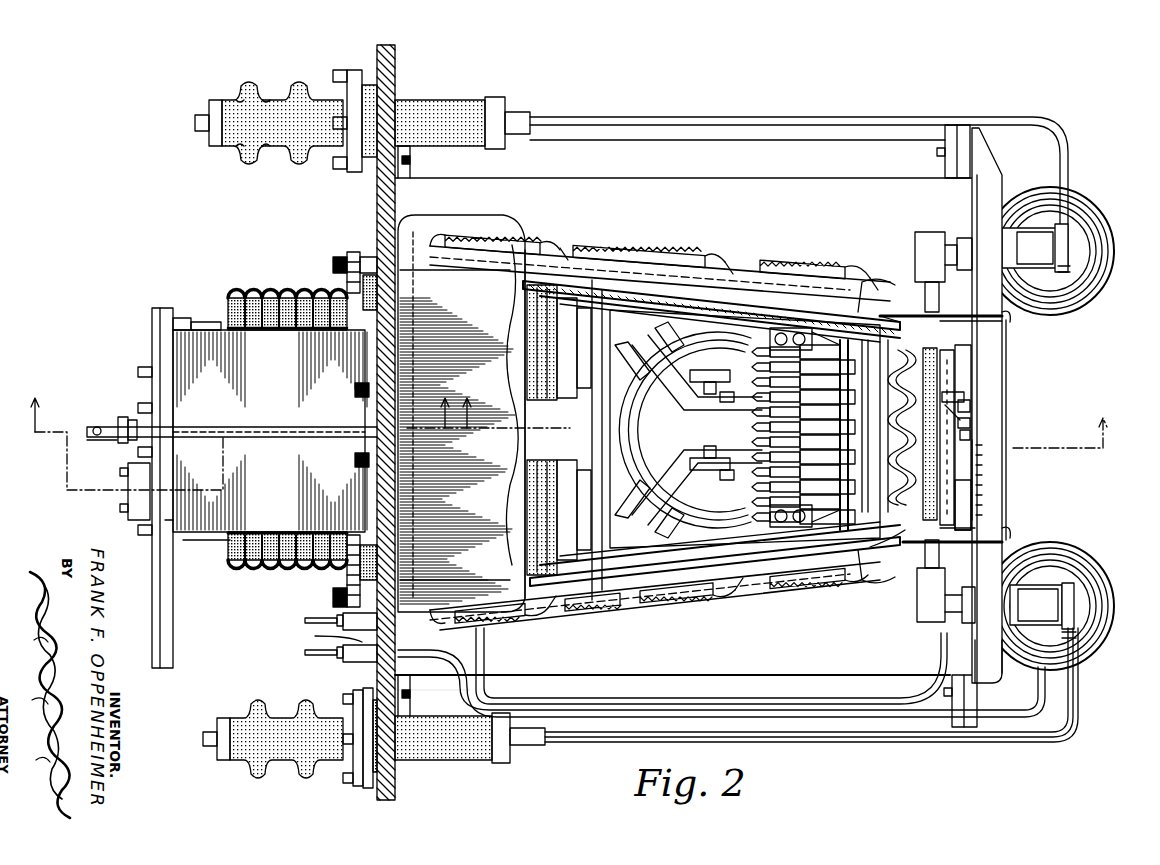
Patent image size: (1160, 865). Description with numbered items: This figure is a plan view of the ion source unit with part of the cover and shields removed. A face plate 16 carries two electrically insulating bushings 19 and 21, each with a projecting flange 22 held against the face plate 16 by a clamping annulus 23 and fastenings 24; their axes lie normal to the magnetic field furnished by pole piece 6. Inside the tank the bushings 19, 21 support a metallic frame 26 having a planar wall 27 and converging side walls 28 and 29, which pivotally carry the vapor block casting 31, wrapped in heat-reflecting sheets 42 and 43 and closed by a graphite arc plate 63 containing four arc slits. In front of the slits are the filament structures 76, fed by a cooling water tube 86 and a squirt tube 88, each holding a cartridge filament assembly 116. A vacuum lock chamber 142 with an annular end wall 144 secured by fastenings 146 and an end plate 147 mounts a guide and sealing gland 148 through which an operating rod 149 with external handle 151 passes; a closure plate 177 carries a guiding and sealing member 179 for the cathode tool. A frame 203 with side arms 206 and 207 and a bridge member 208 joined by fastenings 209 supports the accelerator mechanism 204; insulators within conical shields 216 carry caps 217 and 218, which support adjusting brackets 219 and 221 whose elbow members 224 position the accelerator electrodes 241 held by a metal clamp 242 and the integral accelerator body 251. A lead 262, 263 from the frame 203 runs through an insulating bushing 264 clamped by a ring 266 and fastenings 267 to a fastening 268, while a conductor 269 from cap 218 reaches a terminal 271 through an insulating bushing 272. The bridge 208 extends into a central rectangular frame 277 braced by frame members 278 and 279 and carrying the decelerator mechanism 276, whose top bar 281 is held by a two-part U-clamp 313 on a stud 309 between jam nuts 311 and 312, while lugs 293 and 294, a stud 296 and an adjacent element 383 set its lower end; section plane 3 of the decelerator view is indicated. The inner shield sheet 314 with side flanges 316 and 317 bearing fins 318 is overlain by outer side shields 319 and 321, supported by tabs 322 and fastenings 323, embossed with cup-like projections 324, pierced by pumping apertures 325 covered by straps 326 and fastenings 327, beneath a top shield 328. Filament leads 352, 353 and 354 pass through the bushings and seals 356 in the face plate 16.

The section line 3- 3 is at (785, 410).
The pole piece 6 is at (297, 429).
The face plate 16 is at (385, 797).
The electrically insulating bushing 19 is at (253, 293).
The electrically insulating bushing 21 is at (274, 570).
The projecting flange 22 is at (368, 255).
The clamping annulus 23 is at (350, 256).
The fastenings 24 is at (333, 266).
The metallic frame 26 is at (594, 423).
The planar wall 27 is at (596, 458).
The side wall 28 is at (702, 300).
The side wall 29 is at (745, 572).
The vapor block casting 31 is at (646, 438).
The sheet 42 is at (636, 405).
The sheet 43 is at (640, 445).
The graphite arc plate 63 is at (880, 426).
The filament structures 76 is at (754, 434).
The cooling water tube 86 is at (710, 420).
The squirt tube 88 is at (736, 436).
The filament assembly 116 is at (856, 355).
The vacuum lock chamber 142 is at (297, 407).
The annular end wall 144 is at (376, 408).
The fastenings 146 is at (355, 389).
The end plate 147 is at (172, 522).
The guide and sealing gland 148 is at (124, 416).
The operating rod 149 is at (103, 441).
The external handle 151 is at (97, 426).
The closure plate 177 is at (166, 652).
The guiding and sealing member 179 is at (122, 510).
The frame 203 is at (786, 682).
The accelerator mechanism 204 is at (882, 313).
The side arm 206 is at (692, 688).
The side arm 207 is at (770, 179).
The bridge member 208 is at (966, 216).
The fastenings 209 is at (937, 154).
The conical shield 216 is at (1064, 321).
The cap 217 is at (1058, 580).
The cap 218 is at (1050, 295).
The adjusting bracket 219 is at (1050, 610).
The adjusting bracket 221 is at (1040, 256).
The elbow member 224 is at (926, 240).
The accelerator electrodes 241 is at (884, 475).
The metal clamp 242 is at (906, 549).
The integral accelerator body 251 is at (884, 395).
The axle end 262 is at (1074, 600).
The pipe 263 is at (1076, 702).
The insulating bushing 264 is at (444, 762).
The ring 266 is at (363, 696).
The fastenings 267 is at (343, 699).
The fastening 268 is at (209, 736).
The conductor 269 is at (798, 119).
The terminal 271 is at (199, 114).
The insulating bushing 272 is at (446, 100).
The decelerator mechanism 276 is at (930, 348).
The central rectangular frame 277 is at (1000, 473).
The frame member 278 is at (985, 648).
The frame member 279 is at (1000, 172).
The top bar 281 is at (947, 378).
The lug 293 is at (966, 498).
The lug 294 is at (962, 359).
The stud 296 is at (970, 435).
The stud 309 is at (970, 423).
The jam nut 311 is at (946, 420).
The jam nut 312 is at (970, 406).
The two-part U-clamp 313 is at (964, 397).
The upper folded sheet 314 is at (516, 325).
The side flange 316 is at (675, 298).
The side flange 317 is at (645, 582).
The projecting fin 318 is at (838, 310).
The outer side shield 319 is at (604, 256).
The outer side shield 321 is at (595, 616).
The tab 322 is at (1008, 333).
The fastening 323 is at (988, 313).
The cup-like projection 324 is at (432, 230).
The aperture 325 is at (480, 228).
The strap 326 is at (512, 236).
The fastening 327 is at (541, 240).
The top shield 328 is at (493, 331).
The lead 352 is at (190, 322).
The lead 353 is at (305, 620).
The lead 354 is at (310, 653).
The seal 356 is at (321, 636).
The plate 383 is at (990, 520).